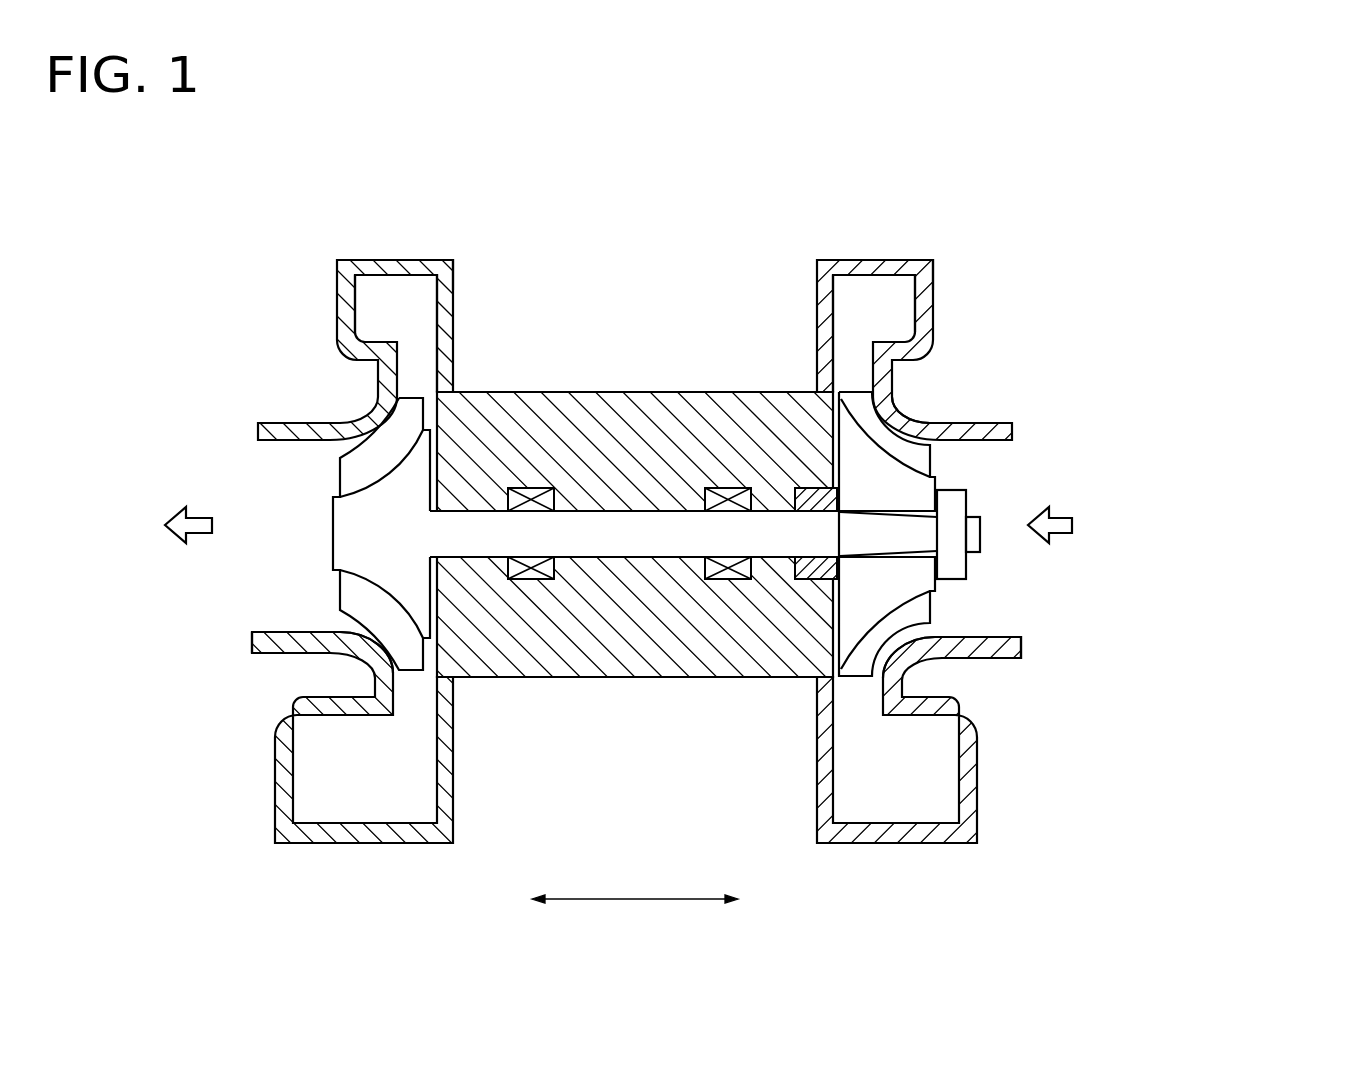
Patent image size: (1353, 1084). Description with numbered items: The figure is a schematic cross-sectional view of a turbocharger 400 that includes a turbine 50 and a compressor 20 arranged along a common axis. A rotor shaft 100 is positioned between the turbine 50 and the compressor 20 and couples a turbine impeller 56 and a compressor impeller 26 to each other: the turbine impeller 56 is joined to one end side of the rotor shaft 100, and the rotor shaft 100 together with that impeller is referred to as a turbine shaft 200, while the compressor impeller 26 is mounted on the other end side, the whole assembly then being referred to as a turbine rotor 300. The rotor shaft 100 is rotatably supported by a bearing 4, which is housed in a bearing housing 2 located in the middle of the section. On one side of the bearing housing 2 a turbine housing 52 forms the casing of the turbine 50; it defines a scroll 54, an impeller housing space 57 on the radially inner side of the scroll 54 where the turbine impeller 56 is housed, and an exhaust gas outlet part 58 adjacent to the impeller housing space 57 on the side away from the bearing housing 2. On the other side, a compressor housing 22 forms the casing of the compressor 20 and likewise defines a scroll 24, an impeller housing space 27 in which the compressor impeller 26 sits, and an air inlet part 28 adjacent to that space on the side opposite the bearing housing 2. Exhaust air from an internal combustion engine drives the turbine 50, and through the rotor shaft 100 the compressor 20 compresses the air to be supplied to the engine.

The bearing housing 2 is at (603, 410).
The bearing 4 is at (727, 488).
The compressor 20 is at (887, 247).
The compressor housing 22 is at (927, 268).
The scroll 24 is at (865, 318).
The compressor impeller 26 is at (917, 418).
The impeller housing space 27 is at (931, 628).
The air inlet part 28 is at (1005, 637).
The turbine 50 is at (403, 220).
The turbine housing 52 is at (345, 270).
The scroll 54 is at (378, 318).
The turbine impeller 56 is at (407, 657).
The impeller housing space 57 is at (342, 622).
The exhaust gas outlet part 58 is at (273, 633).
The rotor shaft 100 is at (558, 532).
The turbine shaft 200 is at (635, 589).
The turbine rotor 300 is at (1090, 640).
The turbocharger 400 is at (1351, 182).